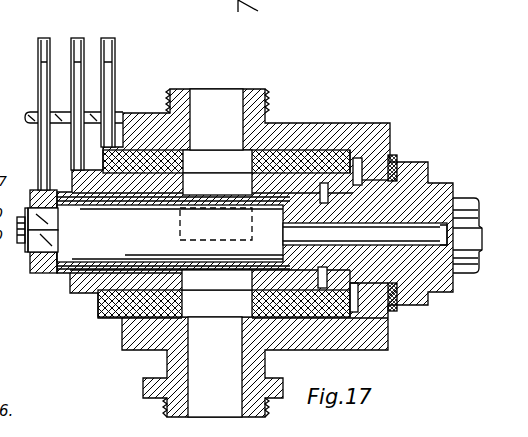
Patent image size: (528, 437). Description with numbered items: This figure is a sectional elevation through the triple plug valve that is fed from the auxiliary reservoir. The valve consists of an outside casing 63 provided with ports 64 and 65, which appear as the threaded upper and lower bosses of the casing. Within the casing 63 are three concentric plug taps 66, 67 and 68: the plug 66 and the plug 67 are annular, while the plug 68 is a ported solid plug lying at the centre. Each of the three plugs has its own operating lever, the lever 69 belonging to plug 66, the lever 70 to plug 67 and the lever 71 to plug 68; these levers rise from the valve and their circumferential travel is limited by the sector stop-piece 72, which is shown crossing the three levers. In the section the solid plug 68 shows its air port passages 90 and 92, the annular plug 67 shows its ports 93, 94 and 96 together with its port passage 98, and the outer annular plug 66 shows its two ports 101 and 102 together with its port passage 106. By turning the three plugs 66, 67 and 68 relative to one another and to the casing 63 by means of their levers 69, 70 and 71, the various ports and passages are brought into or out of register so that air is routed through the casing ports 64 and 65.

The outside casing 63 is at (325, 119).
The port 64 is at (216, 119).
The port 65 is at (215, 367).
The plug tap 66 is at (226, 161).
The plug tap 67 is at (212, 172).
The plug tap 68 is at (252, 233).
The lever 69 is at (115, 58).
The lever 70 is at (68, 50).
The lever 71 is at (38, 57).
The sector stop-piece 72 is at (27, 115).
The air port passage 90 is at (220, 202).
The air port passage 92 is at (91, 283).
The port 93 is at (29, 232).
The port 94 is at (273, 190).
The port 96 is at (229, 292).
The port passage 98 is at (175, 303).
The port 101 is at (304, 171).
The port 102 is at (270, 300).
The port passage 106 is at (194, 328).